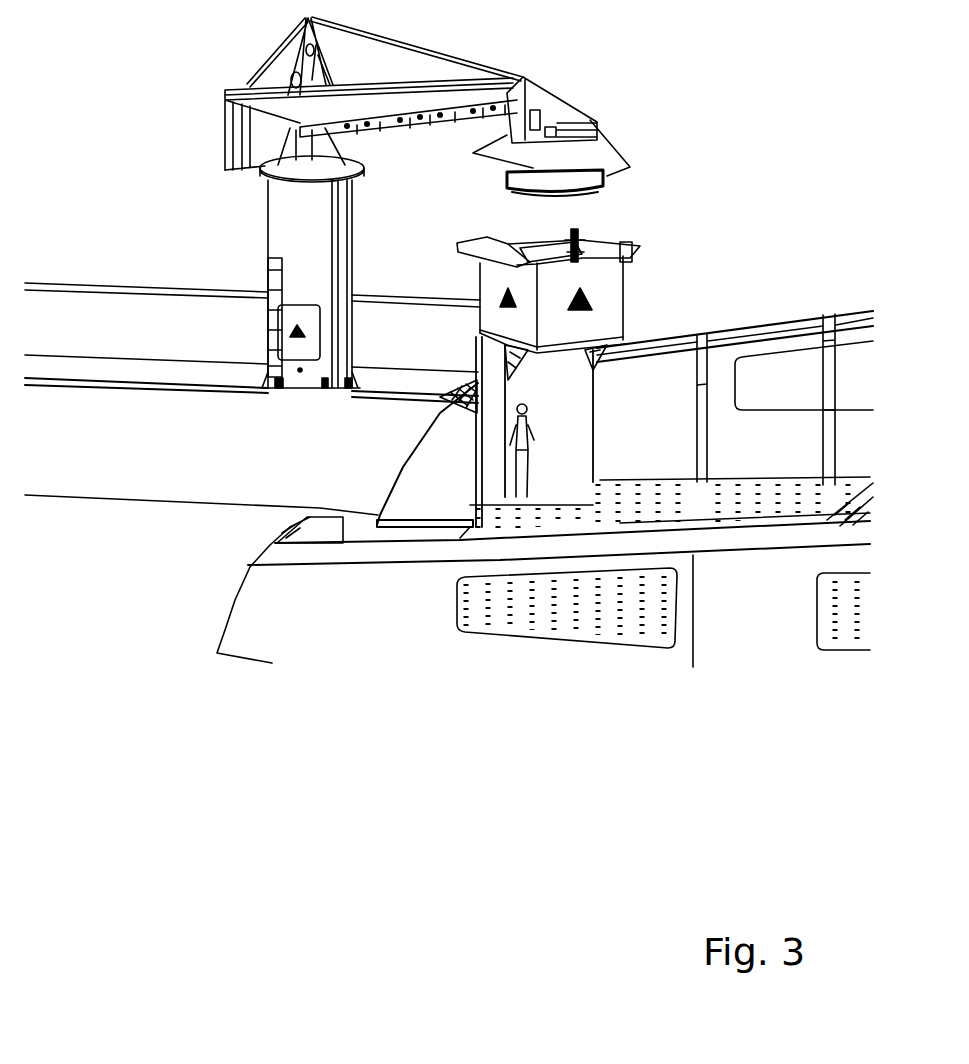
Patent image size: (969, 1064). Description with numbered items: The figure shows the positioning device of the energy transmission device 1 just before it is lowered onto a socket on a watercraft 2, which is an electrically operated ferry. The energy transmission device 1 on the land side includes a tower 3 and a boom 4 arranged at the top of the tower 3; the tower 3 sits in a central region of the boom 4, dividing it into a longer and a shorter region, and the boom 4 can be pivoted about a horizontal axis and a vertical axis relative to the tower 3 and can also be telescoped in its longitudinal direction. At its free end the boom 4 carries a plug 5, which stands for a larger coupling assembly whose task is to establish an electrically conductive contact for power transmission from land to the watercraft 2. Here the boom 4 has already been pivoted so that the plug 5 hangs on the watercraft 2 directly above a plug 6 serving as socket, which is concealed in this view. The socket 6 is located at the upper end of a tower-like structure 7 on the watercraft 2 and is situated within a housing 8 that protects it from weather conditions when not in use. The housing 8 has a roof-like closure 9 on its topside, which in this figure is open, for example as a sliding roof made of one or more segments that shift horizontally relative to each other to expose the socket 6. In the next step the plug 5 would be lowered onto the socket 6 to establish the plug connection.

The energy transmission device 1 is at (205, 132).
The watercraft 2 is at (760, 318).
The tower 3 is at (305, 210).
The boom 4 is at (357, 110).
The plug 5 is at (585, 170).
The socket 6 is at (583, 250).
The tower-like structure 7 is at (557, 413).
The housing 8 is at (602, 302).
The roof-like closure 9 is at (630, 243).